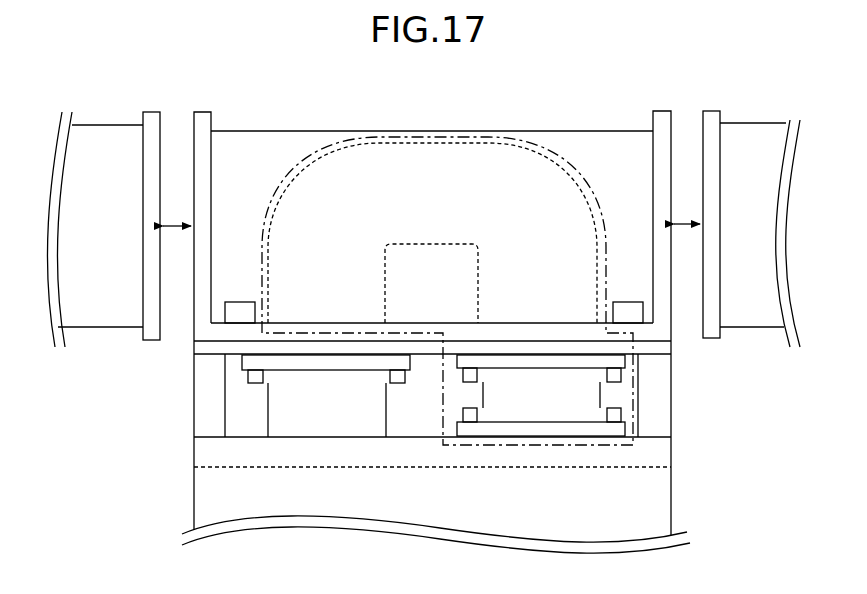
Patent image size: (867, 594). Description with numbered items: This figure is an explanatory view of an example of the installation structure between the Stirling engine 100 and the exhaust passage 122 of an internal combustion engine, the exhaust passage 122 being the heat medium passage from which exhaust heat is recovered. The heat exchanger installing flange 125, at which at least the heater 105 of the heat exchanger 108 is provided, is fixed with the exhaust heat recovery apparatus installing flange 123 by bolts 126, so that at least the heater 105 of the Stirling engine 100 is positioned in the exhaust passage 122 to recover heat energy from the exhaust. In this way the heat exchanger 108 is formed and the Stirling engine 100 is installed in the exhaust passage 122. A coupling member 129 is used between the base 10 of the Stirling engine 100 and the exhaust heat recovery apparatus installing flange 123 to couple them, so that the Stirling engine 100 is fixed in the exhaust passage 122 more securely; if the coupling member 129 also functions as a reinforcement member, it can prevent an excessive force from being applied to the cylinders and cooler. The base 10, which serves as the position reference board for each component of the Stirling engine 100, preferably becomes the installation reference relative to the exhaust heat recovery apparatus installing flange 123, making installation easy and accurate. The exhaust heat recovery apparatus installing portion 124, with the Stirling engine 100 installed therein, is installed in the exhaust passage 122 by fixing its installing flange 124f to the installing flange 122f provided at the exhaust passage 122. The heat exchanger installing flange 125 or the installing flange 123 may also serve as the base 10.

The Stirling engine 100 is at (706, 493).
The base 10 is at (660, 453).
The heater 105 is at (572, 176).
The heat exchanger 108 is at (525, 141).
The exhaust passage 122 is at (100, 130).
The installing flange 122f is at (142, 336).
The exhaust heat recovery apparatus installing flange 123 is at (663, 330).
The exhaust heat recovery apparatus installing portion 124 is at (257, 114).
The installing flange 124f is at (146, 112).
The heat exchanger installing flange 125 is at (197, 349).
The bolts 126 is at (240, 304).
The coupling member 129 is at (200, 427).